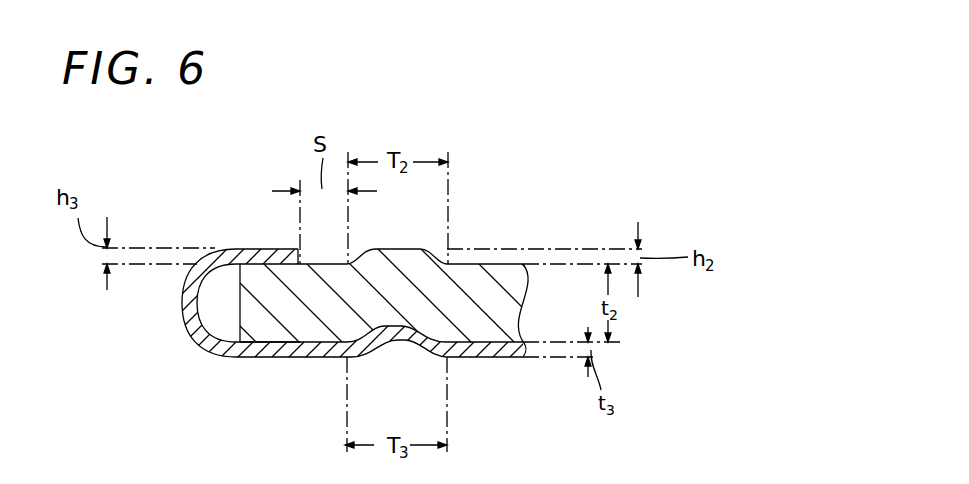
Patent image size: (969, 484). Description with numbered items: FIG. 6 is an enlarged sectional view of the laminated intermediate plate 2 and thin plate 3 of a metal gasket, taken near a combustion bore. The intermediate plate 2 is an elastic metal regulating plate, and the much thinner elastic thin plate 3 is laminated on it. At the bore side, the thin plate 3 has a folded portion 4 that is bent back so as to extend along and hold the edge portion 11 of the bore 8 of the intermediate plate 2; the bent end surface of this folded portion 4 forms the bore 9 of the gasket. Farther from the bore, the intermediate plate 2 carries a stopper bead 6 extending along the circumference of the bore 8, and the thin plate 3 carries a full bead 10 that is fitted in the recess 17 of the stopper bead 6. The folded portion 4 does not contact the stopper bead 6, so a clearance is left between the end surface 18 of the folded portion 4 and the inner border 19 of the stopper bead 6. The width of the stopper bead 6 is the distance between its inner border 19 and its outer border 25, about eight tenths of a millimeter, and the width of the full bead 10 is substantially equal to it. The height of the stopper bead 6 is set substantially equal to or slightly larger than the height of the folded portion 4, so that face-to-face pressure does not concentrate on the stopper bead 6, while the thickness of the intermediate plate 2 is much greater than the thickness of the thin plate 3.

The intermediate plate 2 is at (505, 307).
The thin plate 3 is at (497, 360).
The folded portions 4 is at (257, 257).
The stopper beads 6 is at (395, 258).
The bore 8 is at (240, 313).
The bore 9 is at (182, 296).
The full beads 10 is at (401, 341).
The edge portions 11 is at (255, 313).
The recesses 17 is at (387, 330).
The end surfaces 18 is at (299, 250).
The inner border 19 is at (350, 262).
The outer border 25 is at (447, 262).